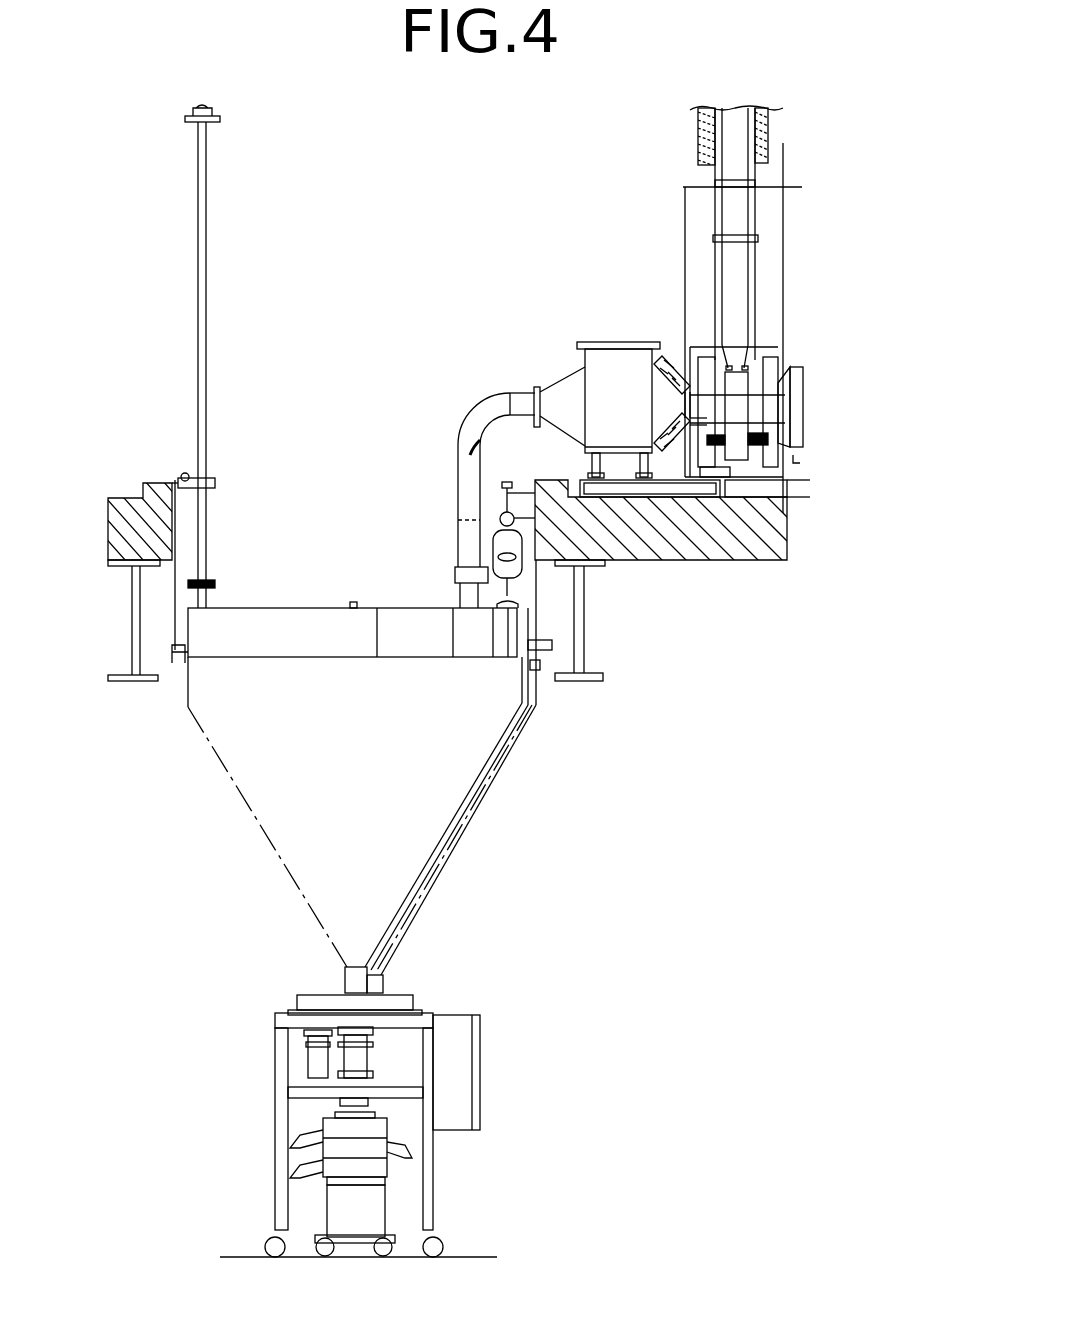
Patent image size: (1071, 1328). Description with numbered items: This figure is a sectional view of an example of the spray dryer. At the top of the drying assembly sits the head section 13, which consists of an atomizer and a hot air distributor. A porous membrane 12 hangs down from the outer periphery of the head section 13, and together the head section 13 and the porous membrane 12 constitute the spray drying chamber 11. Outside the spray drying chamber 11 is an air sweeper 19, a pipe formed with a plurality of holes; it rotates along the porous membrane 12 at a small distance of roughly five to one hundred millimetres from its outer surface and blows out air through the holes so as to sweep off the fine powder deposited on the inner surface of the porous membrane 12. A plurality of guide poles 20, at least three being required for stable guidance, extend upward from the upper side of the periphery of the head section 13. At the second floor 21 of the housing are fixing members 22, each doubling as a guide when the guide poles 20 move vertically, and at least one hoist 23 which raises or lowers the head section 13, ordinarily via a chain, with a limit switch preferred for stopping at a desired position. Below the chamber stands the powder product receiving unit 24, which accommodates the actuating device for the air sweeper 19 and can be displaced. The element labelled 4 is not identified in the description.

The weighing hopper 4 is at (628, 342).
The spray drying chamber 11 is at (487, 728).
The porous membrane 12 is at (262, 835).
The head section 13 is at (510, 628).
The air sweeper 19 is at (462, 848).
The guide poles 20 is at (198, 262).
The second floor 21 is at (727, 560).
The fixing members 22 is at (183, 474).
The hoist 23 is at (537, 567).
The powder product receiving unit 24 is at (443, 1075).